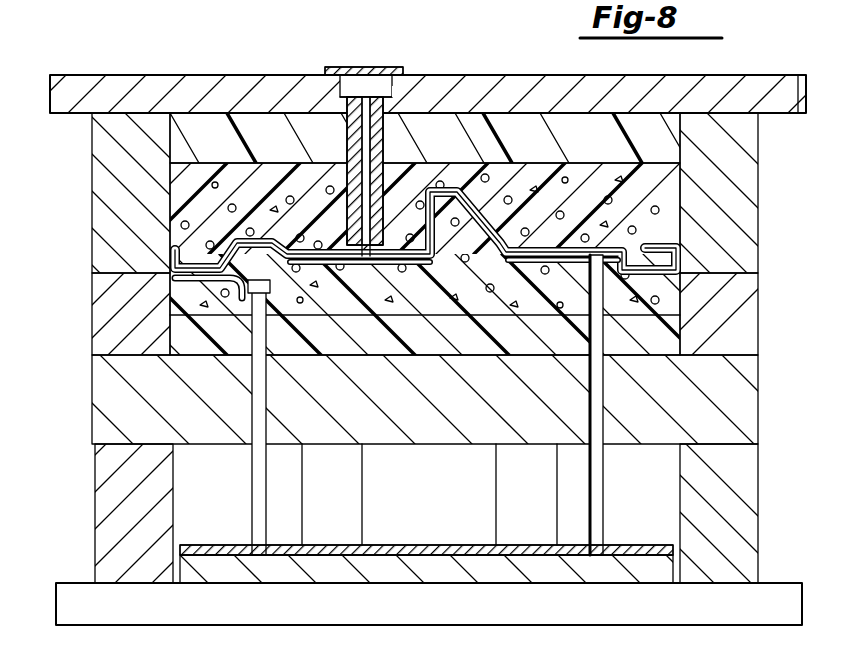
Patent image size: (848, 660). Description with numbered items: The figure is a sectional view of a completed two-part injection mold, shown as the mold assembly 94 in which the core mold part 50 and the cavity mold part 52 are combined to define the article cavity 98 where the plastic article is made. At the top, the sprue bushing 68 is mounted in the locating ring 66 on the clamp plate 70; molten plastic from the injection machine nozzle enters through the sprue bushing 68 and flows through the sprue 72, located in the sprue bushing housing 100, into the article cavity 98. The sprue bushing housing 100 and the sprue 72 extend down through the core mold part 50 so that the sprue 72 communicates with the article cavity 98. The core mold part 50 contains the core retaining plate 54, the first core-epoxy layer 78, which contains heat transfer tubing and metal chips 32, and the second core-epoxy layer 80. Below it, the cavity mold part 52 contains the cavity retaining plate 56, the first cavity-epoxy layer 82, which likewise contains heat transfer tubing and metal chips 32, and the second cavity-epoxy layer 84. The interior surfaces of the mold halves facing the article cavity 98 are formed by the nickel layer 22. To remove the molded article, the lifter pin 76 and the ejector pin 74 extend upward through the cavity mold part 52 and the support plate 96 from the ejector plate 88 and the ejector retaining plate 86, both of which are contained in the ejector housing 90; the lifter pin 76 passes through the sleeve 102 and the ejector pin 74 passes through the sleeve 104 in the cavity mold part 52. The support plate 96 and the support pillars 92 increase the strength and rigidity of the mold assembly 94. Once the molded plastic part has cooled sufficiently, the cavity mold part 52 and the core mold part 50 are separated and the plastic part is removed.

The nickel layer 22 is at (690, 245).
The metal chips 32 is at (232, 290).
The core mold part 50 is at (84, 181).
The cavity mold part 52 is at (84, 310).
The core retaining plate 54 is at (100, 218).
The cavity retaining plate 56 is at (105, 322).
The locating ring 66 is at (332, 66).
The sprue bushing 68 is at (372, 66).
The clamp plate 70 is at (508, 80).
The sprue 72 is at (368, 237).
The ejector pin 74 is at (604, 402).
The lifter pin 76 is at (250, 492).
The first core-epoxy layer 78 is at (680, 197).
The second core-epoxy layer 80 is at (603, 151).
The first cavity-epoxy layer 82 is at (705, 340).
The second cavity-epoxy layer 84 is at (496, 345).
The ejector retaining plate 86 is at (400, 544).
The ejector plate 88 is at (628, 570).
The ejector housing 90 is at (85, 598).
The support pillars 92 is at (496, 492).
The mold assembly 94 is at (172, 60).
The support plate 96 is at (722, 422).
The article cavity 98 is at (482, 180).
The sprue bushing housing 100 is at (392, 87).
The sleeve 102 is at (286, 345).
The sleeve 104 is at (551, 391).